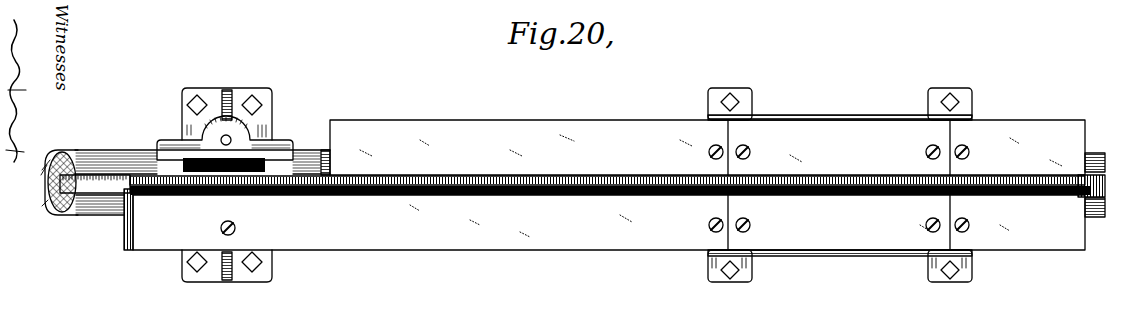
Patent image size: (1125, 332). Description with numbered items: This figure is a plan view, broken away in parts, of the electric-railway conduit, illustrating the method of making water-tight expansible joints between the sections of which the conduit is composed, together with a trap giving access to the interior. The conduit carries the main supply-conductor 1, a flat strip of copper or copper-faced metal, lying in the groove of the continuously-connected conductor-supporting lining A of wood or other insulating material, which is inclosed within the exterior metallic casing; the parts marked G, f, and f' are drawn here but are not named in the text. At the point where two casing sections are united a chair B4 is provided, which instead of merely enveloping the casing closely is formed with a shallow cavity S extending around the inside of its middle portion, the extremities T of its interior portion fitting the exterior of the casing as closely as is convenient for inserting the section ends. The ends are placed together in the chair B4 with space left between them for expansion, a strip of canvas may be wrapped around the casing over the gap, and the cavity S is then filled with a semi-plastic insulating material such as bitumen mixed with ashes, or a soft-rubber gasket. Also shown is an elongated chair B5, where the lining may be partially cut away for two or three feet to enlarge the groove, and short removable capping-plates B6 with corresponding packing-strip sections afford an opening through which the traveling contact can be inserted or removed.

The main supply-conductor 1 is at (44, 188).
The conductor-supporting filling or lining A is at (50, 208).
The lower guide rod G is at (99, 217).
The extremities of the interior portion of the chair T is at (168, 143).
The shallow cavity S is at (218, 147).
The chair B4 is at (268, 132).
The elongated chair B5 is at (930, 100).
The short capping-plate B6 is at (839, 185).
The bar f is at (604, 185).
The screw f' is at (238, 220).